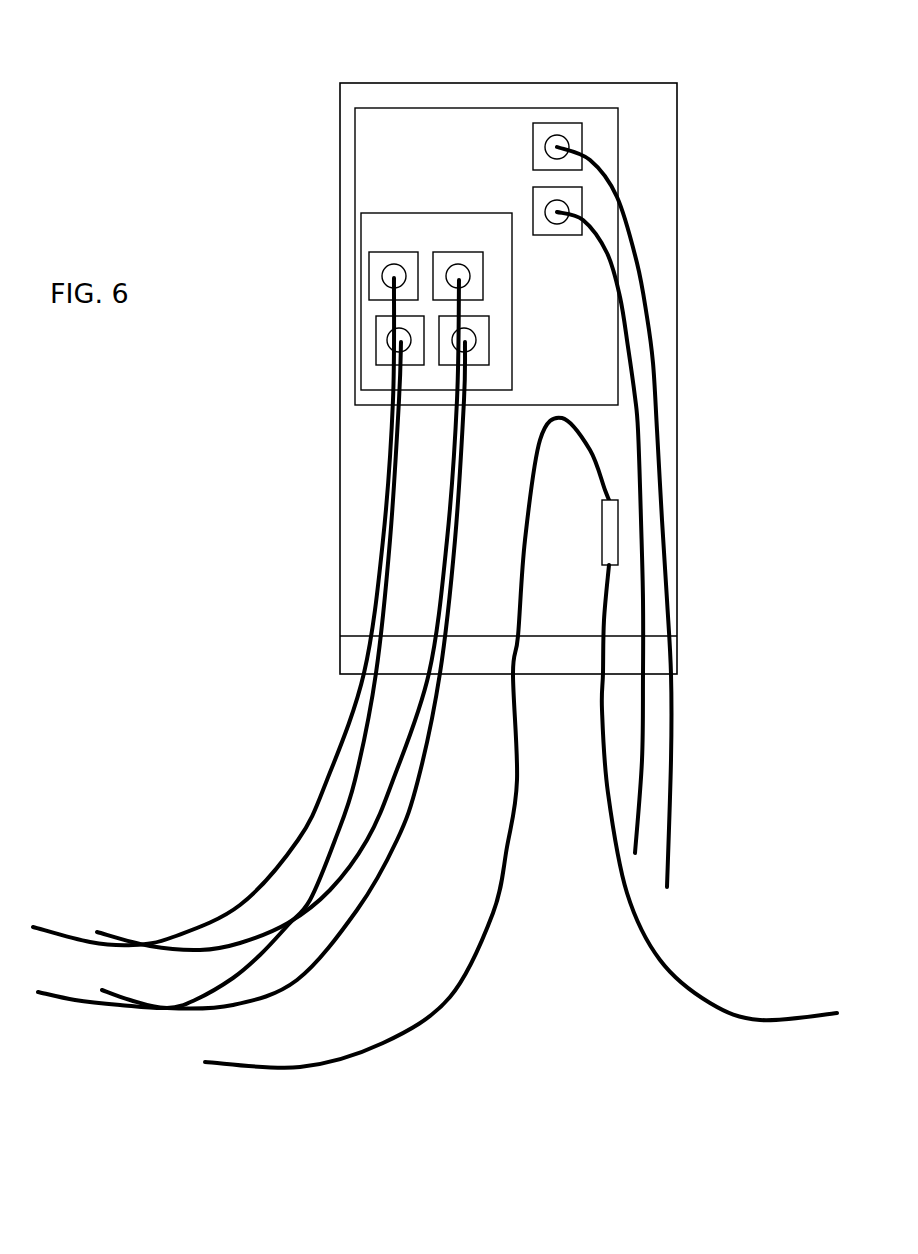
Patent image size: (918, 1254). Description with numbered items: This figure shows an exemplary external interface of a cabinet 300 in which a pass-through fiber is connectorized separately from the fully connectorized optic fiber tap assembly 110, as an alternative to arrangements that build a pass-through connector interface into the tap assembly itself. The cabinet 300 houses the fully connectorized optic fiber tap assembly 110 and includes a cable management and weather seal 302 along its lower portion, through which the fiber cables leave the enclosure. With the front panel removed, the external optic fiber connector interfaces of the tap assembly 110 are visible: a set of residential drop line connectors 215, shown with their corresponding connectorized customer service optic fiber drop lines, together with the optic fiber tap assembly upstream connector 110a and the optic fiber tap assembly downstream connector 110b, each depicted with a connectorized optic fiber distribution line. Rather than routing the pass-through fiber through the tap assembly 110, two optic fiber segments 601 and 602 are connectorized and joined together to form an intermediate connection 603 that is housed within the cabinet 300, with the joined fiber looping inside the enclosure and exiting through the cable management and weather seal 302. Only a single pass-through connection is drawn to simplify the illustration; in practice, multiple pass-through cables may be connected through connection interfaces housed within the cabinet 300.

The cabinet 300 is at (337, 454).
The cable management and weather seal 302 is at (525, 667).
The fully connectorized optic fiber tap assembly 110 is at (447, 157).
The set of residential drop line connectors 215 is at (440, 242).
The optic fiber tap assembly upstream connector 110a is at (575, 198).
The optic fiber tap assembly downstream connector 110b is at (575, 139).
The optic fiber segment 601 is at (505, 900).
The optic fiber segment 602 is at (682, 983).
The intermediate connection 603 is at (618, 513).